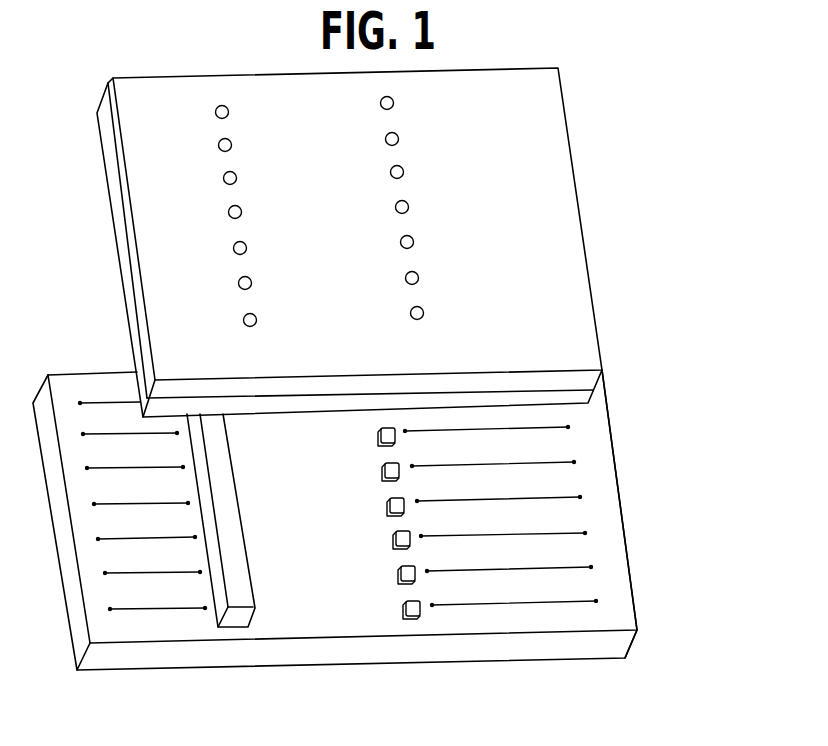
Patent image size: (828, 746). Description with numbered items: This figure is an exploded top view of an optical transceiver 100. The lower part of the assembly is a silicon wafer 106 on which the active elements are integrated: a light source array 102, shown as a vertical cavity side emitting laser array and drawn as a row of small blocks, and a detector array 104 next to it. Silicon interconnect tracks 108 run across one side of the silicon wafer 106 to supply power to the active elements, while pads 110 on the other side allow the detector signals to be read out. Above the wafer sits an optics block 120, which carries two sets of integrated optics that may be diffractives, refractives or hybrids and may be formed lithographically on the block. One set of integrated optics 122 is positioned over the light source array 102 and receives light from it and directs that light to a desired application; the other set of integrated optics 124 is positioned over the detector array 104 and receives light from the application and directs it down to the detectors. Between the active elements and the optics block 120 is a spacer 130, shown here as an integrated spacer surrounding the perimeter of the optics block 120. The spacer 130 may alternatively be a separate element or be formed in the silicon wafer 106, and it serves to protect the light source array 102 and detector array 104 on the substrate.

The optical transceiver 100 is at (683, 304).
The light source array 102 is at (233, 627).
The detector array 104 is at (418, 618).
The silicon wafer 106 is at (637, 603).
The silicon interconnect tracks 108 is at (127, 610).
The pads 110 is at (585, 533).
The optics block 120 is at (351, 242).
The integrated optics for the light source 122 is at (214, 112).
The integrated optics for the detectors 124 is at (393, 99).
The spacer 130 is at (115, 257).